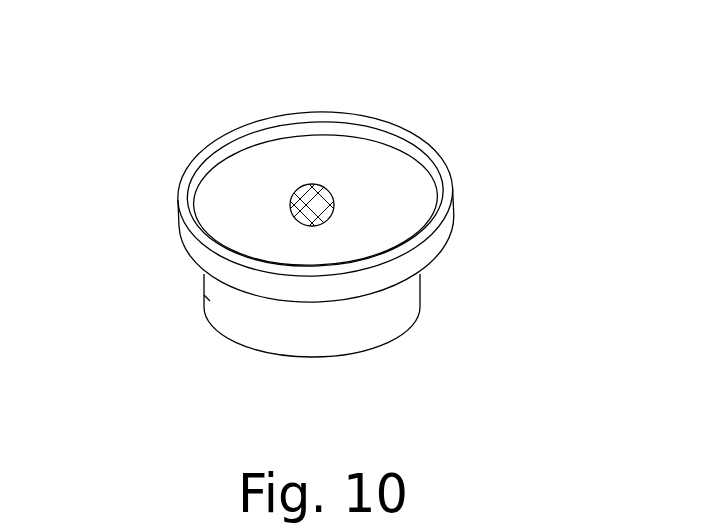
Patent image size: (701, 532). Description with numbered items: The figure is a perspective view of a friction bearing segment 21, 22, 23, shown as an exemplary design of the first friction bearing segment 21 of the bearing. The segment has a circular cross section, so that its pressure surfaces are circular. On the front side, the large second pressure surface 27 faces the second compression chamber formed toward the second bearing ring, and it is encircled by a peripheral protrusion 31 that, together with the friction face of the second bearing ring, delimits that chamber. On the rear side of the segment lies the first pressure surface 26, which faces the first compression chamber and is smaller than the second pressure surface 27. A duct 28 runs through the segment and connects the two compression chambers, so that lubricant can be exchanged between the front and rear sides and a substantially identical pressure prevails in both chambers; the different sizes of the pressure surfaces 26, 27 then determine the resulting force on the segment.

The first friction bearing segment 21 is at (342, 170).
The friction bearing segment 22 is at (342, 170).
The friction bearing segment 23 is at (422, 122).
The first pressure surface 26 is at (362, 352).
The second pressure surface 27 is at (242, 192).
The duct 28 is at (313, 192).
The peripheral protrusion 31 is at (437, 178).